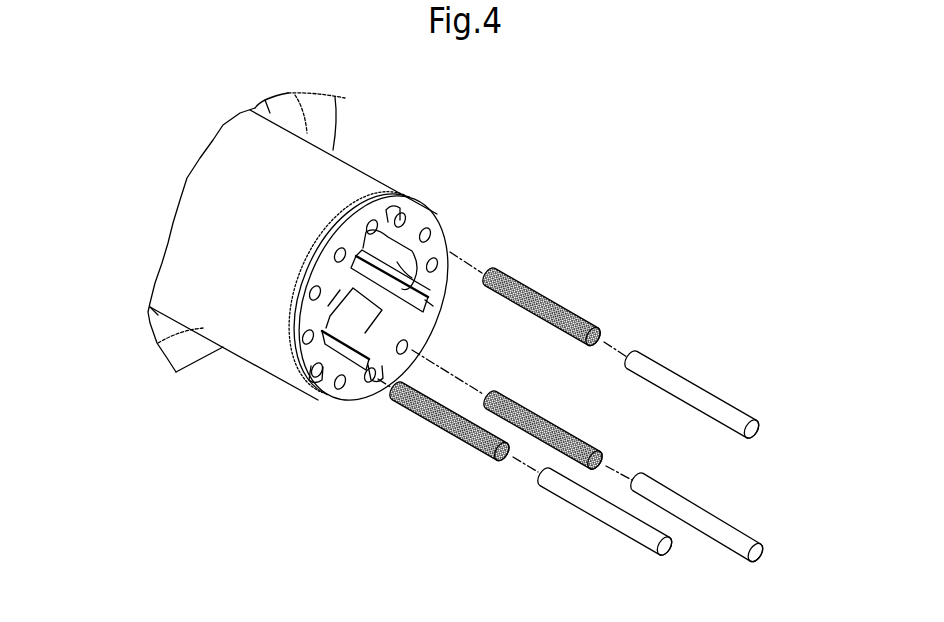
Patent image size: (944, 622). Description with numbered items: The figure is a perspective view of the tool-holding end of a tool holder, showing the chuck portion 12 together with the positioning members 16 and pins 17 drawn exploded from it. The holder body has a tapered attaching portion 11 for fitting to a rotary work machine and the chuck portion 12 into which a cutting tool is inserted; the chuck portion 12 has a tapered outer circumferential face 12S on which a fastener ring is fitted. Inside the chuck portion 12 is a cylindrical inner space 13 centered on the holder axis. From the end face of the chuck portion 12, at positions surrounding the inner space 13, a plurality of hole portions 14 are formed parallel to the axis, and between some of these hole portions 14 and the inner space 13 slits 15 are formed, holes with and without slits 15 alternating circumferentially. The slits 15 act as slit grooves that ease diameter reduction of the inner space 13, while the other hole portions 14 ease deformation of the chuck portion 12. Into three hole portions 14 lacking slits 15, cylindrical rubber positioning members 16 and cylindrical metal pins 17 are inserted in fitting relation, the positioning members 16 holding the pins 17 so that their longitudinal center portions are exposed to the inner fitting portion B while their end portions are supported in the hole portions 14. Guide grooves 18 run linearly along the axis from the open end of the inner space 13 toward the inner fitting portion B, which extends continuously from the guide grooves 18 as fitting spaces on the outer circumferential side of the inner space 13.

The tapered attaching portion 11 is at (190, 352).
The chuck portion 12 is at (265, 375).
The tapered outer circumferential face 12S is at (243, 185).
The inner space 13 is at (435, 295).
The hole portions 14 is at (347, 252).
The slits 15 is at (428, 245).
The positioning members 16 is at (552, 293).
The pins 17 is at (695, 383).
The guide grooves 18 is at (394, 199).
The inner fitting portion B is at (342, 286).